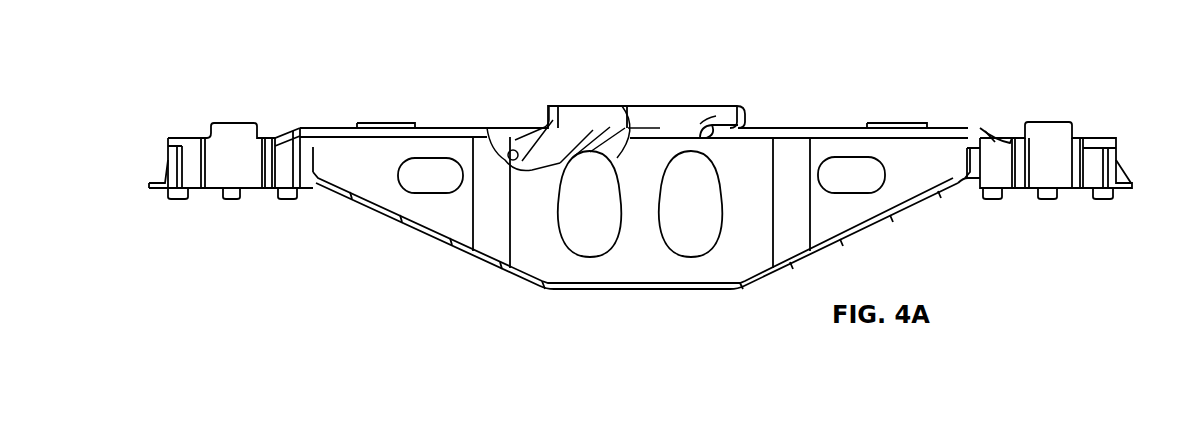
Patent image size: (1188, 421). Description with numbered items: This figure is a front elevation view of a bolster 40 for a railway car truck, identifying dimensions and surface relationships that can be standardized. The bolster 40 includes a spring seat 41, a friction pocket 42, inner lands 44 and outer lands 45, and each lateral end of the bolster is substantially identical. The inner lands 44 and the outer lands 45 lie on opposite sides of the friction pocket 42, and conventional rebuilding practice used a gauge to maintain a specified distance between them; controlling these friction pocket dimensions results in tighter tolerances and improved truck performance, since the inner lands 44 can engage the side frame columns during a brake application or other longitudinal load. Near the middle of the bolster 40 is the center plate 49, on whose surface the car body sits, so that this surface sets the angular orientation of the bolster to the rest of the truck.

The bolster 40 is at (213, 68).
The spring seat 41 is at (1077, 201).
The friction pocket 42 is at (1048, 150).
The inner lands 44 is at (999, 163).
The outer lands 45 is at (1095, 162).
The center plate 49 is at (738, 112).